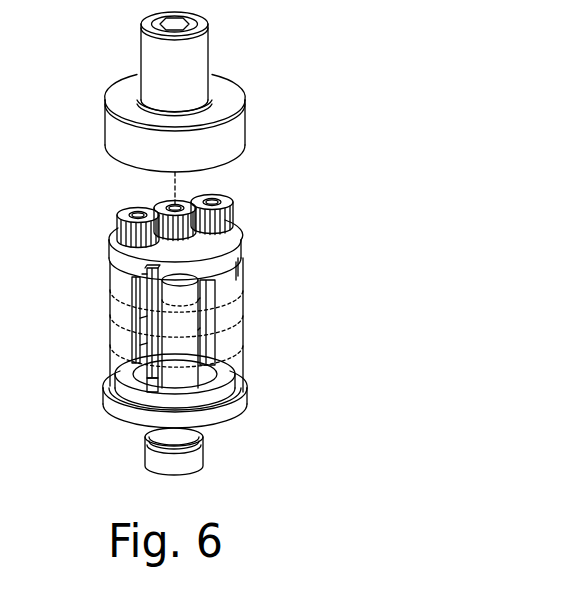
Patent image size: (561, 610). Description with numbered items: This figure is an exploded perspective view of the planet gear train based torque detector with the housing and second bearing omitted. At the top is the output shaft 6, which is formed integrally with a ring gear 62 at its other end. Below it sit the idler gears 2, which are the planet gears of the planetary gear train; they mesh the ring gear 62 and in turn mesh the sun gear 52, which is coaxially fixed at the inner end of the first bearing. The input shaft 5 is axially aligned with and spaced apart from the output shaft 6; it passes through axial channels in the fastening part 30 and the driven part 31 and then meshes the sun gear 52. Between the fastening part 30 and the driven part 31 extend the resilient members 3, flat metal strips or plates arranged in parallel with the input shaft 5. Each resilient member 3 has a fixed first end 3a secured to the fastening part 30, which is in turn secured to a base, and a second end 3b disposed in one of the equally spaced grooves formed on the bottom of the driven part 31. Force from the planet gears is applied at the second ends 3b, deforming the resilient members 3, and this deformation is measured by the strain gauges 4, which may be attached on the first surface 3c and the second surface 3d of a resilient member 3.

The output shaft 6 is at (147, 60).
The ring gear 62 is at (117, 137).
The idler gears 2 is at (115, 232).
The sun gear 52 is at (207, 237).
The driven part 31 is at (222, 263).
The input shaft 5 is at (187, 338).
The resilient members 3 is at (150, 333).
The first end 3a is at (140, 408).
The second end 3b is at (146, 276).
The first surface 3c is at (133, 306).
The second surface 3d is at (208, 312).
The strain gauges 4 is at (133, 382).
The fastening part 30 is at (227, 410).